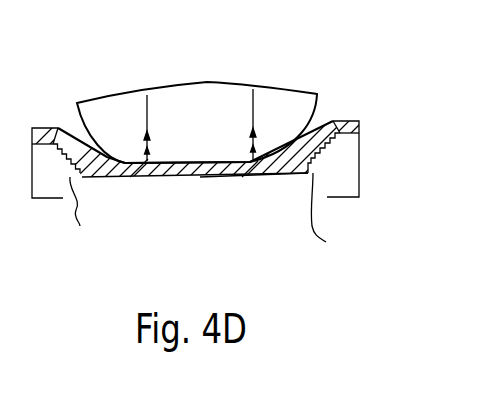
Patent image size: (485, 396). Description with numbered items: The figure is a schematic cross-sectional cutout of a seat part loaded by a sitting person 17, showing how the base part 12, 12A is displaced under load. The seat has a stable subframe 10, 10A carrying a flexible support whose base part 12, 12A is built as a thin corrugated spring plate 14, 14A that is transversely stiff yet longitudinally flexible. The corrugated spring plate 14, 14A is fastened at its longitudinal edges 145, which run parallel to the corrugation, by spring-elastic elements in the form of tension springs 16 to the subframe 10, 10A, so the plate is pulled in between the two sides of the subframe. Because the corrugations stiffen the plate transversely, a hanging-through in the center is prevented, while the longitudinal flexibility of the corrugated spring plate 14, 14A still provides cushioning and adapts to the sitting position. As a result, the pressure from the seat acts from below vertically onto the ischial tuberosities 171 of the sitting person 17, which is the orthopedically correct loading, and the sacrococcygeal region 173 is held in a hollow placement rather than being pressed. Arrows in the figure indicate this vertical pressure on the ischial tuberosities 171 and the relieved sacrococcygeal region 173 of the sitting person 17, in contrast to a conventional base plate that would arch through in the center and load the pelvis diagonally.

The subframe 10 is at (228, 151).
The subframe 10A is at (362, 157).
The base part 12 is at (209, 184).
The base part 12A is at (186, 177).
The corrugated spring plate 14 is at (254, 220).
The corrugated spring plate 14A is at (242, 175).
The tension springs 16 is at (63, 142).
The sitting person 17 is at (170, 118).
The longitudinal edges 145 is at (204, 223).
The ischial tuberosities 171 is at (141, 165).
The sacrococcygeal region 173 is at (203, 155).